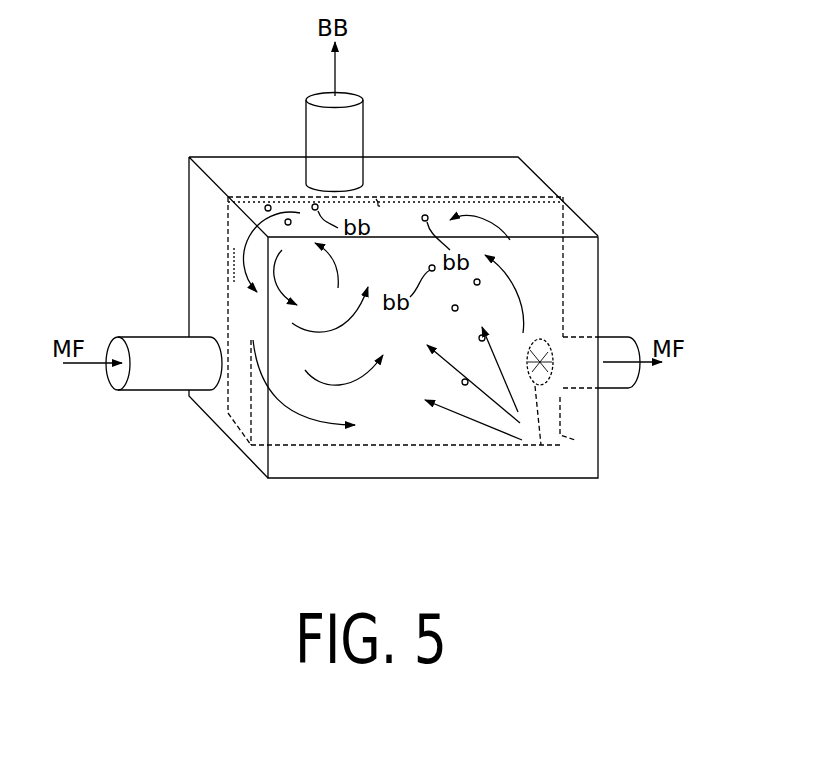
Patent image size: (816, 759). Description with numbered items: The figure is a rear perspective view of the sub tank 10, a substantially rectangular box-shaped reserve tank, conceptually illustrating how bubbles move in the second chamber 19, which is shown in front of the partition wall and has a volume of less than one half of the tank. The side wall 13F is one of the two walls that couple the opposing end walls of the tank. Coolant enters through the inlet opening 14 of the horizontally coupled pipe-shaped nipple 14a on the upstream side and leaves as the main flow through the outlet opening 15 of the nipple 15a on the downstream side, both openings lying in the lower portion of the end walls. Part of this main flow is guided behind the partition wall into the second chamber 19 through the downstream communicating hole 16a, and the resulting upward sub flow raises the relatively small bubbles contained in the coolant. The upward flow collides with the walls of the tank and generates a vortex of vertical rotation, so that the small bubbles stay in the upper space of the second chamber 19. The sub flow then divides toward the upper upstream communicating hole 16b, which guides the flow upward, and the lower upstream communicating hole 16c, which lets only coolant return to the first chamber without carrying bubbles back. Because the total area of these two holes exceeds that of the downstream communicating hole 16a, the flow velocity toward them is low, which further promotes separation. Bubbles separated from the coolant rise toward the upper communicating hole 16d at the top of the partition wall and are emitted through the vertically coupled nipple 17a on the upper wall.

The sub tank 10 is at (580, 98).
The side wall 13F is at (358, 480).
The inlet opening 14 is at (251, 447).
The nipple 14a is at (147, 394).
The outlet opening 15 is at (541, 448).
The nipple 15a is at (617, 392).
The downstream communicating hole 16a is at (568, 437).
The upper upstream communicating hole 16b is at (227, 263).
The lower upstream communicating hole 16c is at (225, 433).
The upper communicating hole 16d is at (378, 200).
The nipple 17a is at (306, 132).
The second chamber 19 is at (538, 293).